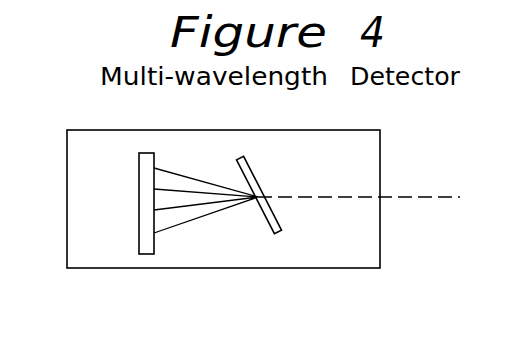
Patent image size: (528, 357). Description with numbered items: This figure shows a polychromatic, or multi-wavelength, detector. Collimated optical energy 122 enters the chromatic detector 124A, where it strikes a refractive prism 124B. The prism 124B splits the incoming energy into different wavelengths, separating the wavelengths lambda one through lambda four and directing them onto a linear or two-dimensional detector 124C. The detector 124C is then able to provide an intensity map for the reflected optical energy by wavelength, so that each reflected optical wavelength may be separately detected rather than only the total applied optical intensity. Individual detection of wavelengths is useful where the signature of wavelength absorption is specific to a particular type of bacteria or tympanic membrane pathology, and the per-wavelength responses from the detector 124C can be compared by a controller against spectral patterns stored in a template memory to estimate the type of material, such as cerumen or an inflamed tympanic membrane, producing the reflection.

The chromatic detector 124A is at (248, 130).
The refractive prism 124B is at (276, 233).
The linear or 2D detector 124C is at (147, 254).
The collimated optical energy 122 is at (359, 181).